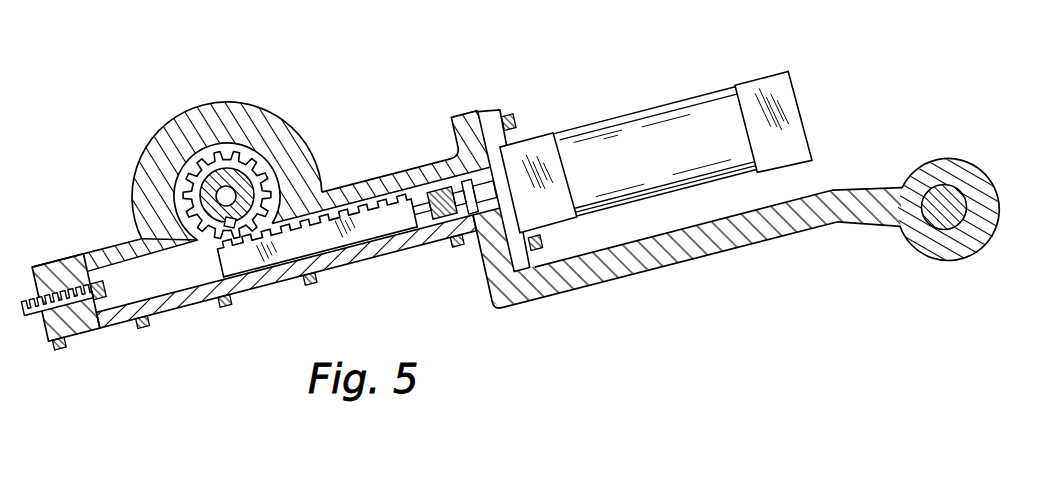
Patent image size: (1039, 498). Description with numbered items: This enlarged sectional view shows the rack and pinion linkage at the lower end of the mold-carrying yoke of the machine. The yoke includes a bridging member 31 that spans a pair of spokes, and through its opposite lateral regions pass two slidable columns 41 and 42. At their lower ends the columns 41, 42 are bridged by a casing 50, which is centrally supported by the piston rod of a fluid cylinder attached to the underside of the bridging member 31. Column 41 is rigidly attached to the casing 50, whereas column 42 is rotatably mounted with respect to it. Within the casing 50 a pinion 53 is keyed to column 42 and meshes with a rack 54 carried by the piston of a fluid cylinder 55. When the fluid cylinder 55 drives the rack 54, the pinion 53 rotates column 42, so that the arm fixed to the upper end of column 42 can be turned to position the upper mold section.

The bridging member 31 is at (952, 157).
The column 41 is at (940, 223).
The column 42 is at (238, 182).
The casing 50 is at (203, 105).
The pinion 53 is at (193, 168).
The rack 54 is at (262, 258).
The fluid cylinder 55 is at (536, 134).